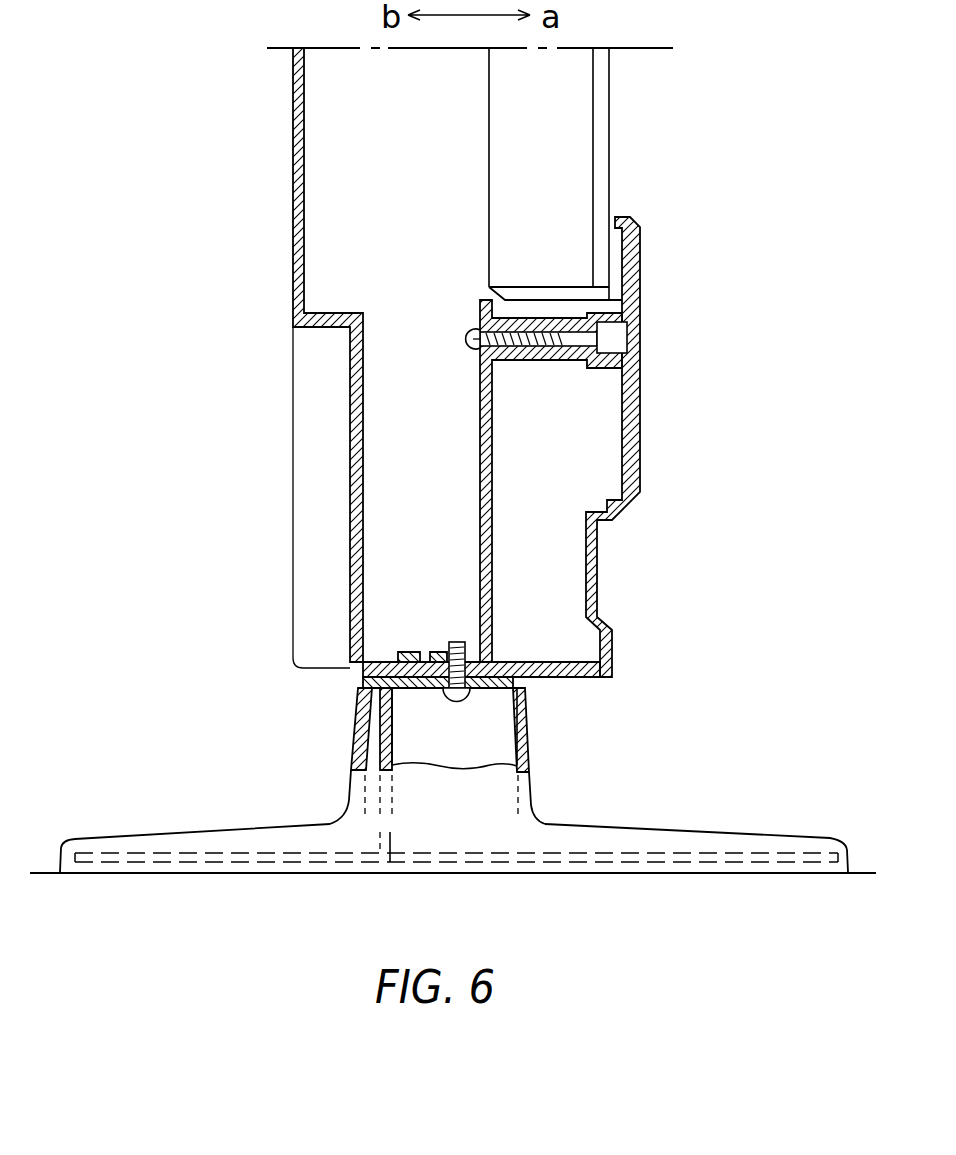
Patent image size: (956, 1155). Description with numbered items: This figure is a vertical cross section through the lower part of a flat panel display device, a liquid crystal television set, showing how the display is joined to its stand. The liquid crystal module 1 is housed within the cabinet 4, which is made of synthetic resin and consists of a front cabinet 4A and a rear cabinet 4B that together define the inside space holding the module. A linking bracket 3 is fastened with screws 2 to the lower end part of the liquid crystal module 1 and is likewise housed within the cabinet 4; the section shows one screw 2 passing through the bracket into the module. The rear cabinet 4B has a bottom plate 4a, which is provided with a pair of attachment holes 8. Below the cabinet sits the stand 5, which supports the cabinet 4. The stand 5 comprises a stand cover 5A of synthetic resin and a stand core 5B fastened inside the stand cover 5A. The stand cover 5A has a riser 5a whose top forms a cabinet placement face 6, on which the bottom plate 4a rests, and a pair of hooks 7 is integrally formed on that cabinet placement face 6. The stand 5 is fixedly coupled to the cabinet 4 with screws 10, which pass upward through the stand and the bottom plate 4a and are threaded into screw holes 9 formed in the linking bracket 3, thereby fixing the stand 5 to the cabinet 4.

The liquid crystal module 1 is at (560, 110).
The screw 2 is at (470, 339).
The linking bracket 3 is at (482, 436).
The cabinet 4 is at (180, 143).
The front cabinet 4A is at (622, 250).
The rear cabinet 4B is at (293, 248).
The bottom plate 4a is at (510, 663).
The stand 5 is at (180, 695).
The stand cover 5A is at (345, 727).
The stand core 5B is at (366, 759).
The riser 5a is at (522, 740).
The cabinet placement face 6 is at (367, 672).
The hook 7 is at (412, 660).
The attachment hole 8 is at (386, 664).
The screw hole 9 is at (457, 641).
The screw 10 is at (457, 700).